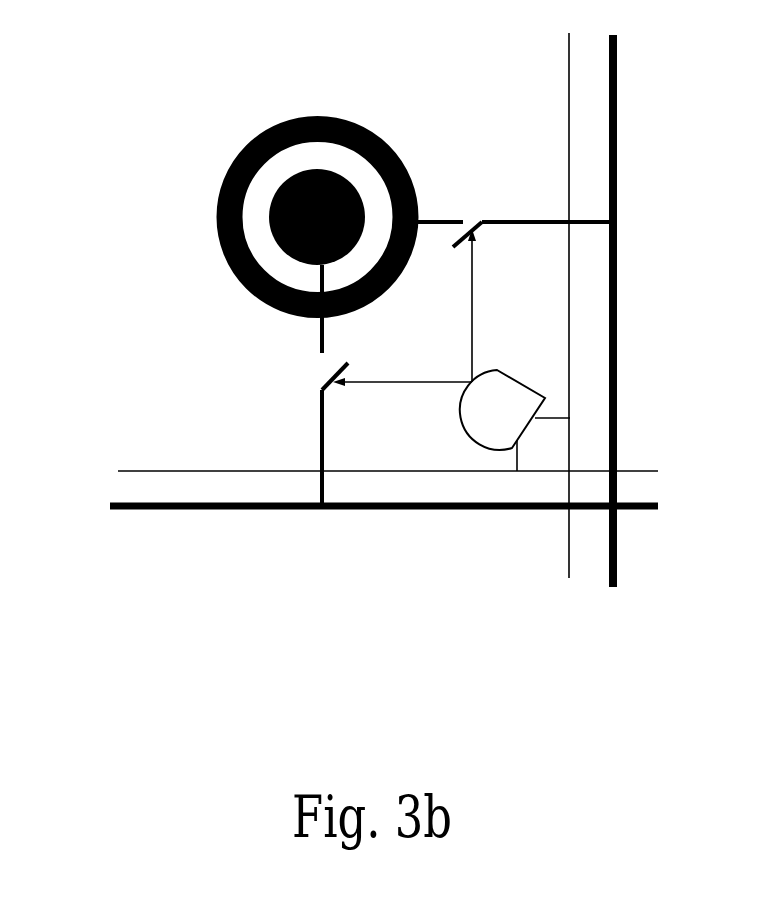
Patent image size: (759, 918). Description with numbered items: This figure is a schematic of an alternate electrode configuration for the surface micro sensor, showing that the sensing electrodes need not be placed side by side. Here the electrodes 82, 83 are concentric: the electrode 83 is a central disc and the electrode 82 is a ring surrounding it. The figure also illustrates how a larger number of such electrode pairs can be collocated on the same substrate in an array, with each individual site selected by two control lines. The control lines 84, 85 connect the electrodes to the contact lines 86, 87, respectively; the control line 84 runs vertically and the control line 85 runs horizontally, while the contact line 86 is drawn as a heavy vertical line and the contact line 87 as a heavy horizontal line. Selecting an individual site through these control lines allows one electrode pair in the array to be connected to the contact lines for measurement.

The electrode 82 is at (271, 102).
The electrode 83 is at (257, 212).
The control line 84 is at (563, 115).
The control line 85 is at (180, 470).
The contact line 86 is at (620, 307).
The contact line 87 is at (195, 498).